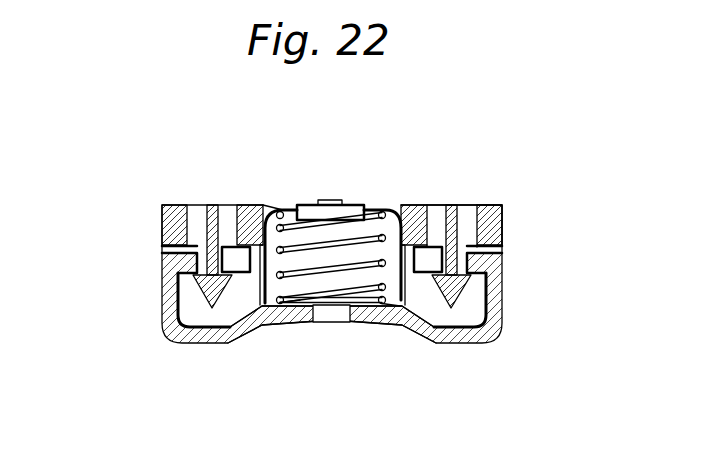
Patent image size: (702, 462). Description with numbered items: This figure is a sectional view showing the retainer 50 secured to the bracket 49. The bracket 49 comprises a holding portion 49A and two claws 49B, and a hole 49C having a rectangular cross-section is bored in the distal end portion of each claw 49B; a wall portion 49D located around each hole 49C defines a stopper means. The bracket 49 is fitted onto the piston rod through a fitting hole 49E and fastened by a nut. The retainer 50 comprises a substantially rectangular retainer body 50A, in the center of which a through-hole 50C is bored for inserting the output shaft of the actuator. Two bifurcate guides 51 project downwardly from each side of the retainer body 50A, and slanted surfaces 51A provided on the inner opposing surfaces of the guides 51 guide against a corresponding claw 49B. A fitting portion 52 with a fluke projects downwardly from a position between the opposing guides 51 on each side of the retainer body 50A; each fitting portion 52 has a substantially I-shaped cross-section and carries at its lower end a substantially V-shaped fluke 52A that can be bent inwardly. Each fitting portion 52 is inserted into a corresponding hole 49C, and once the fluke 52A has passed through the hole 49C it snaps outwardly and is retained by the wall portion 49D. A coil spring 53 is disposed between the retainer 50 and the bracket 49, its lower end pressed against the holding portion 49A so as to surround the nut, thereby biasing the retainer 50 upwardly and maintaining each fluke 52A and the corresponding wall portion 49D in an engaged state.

The bracket 49 is at (474, 352).
The holding portion 49A is at (297, 310).
The claw 49B is at (175, 260).
The hole 49C is at (510, 203).
The wall portion 49D is at (443, 203).
The fitting hole 49E is at (333, 322).
The retainer 50 is at (385, 204).
The retainer body 50A is at (257, 204).
The through-hole 50C is at (343, 200).
The bifurcate guide 51 is at (270, 304).
The slanted surface 51A is at (240, 306).
The fitting portion 52 is at (160, 250).
The fluke 52A is at (225, 292).
The coil spring 53 is at (396, 308).